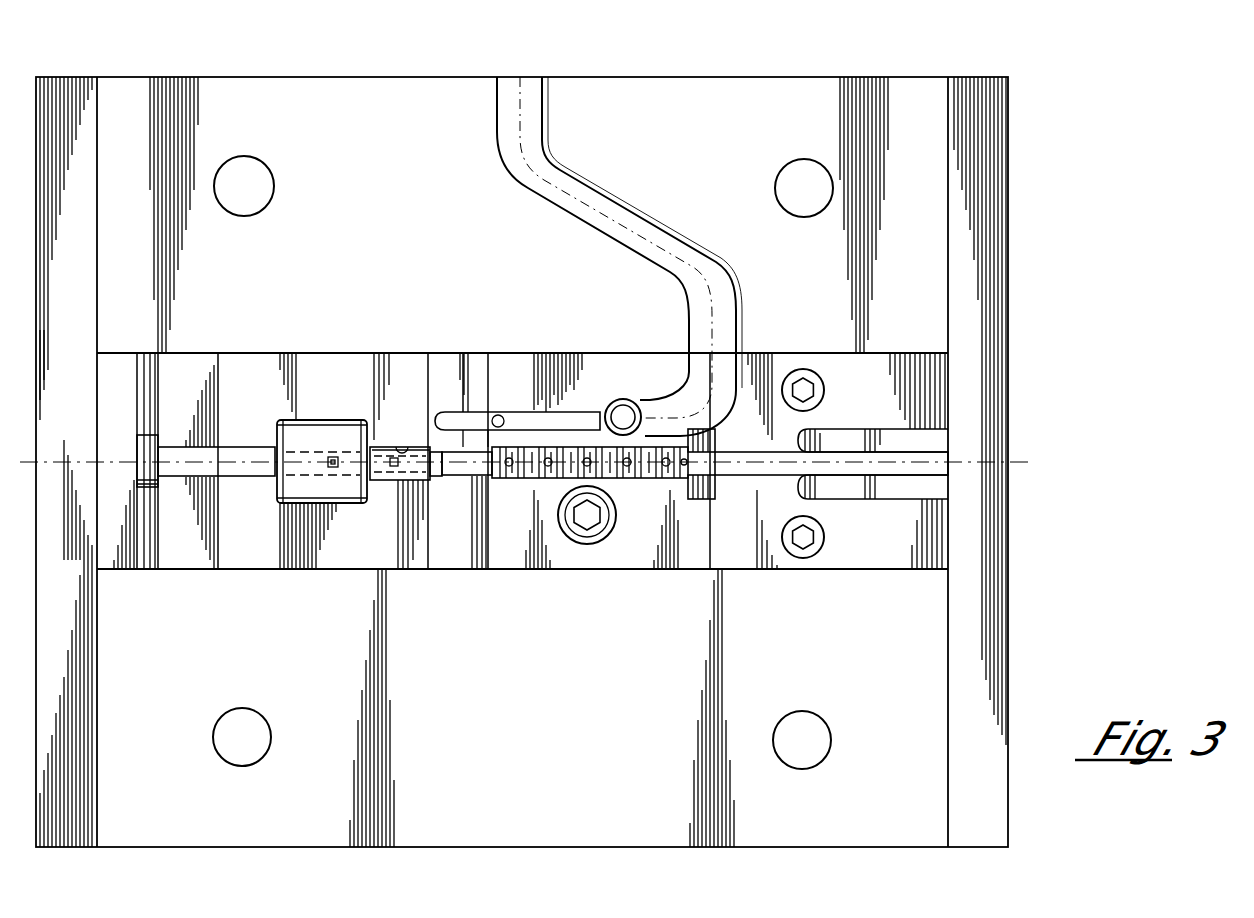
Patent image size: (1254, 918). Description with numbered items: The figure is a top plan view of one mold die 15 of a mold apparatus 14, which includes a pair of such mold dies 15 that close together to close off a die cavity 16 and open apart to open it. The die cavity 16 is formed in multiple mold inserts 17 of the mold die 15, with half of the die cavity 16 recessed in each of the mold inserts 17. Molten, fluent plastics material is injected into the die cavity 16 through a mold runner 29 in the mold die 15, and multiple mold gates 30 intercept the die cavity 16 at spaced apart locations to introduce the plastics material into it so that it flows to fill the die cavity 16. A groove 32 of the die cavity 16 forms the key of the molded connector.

The mold apparatus 14 is at (226, 70).
The mold die 15 is at (322, 112).
The die cavity 16 is at (452, 472).
The mold inserts 17 is at (383, 548).
The mold runner 29 is at (597, 212).
The mold gates 30 is at (592, 443).
The groove 32 is at (415, 447).